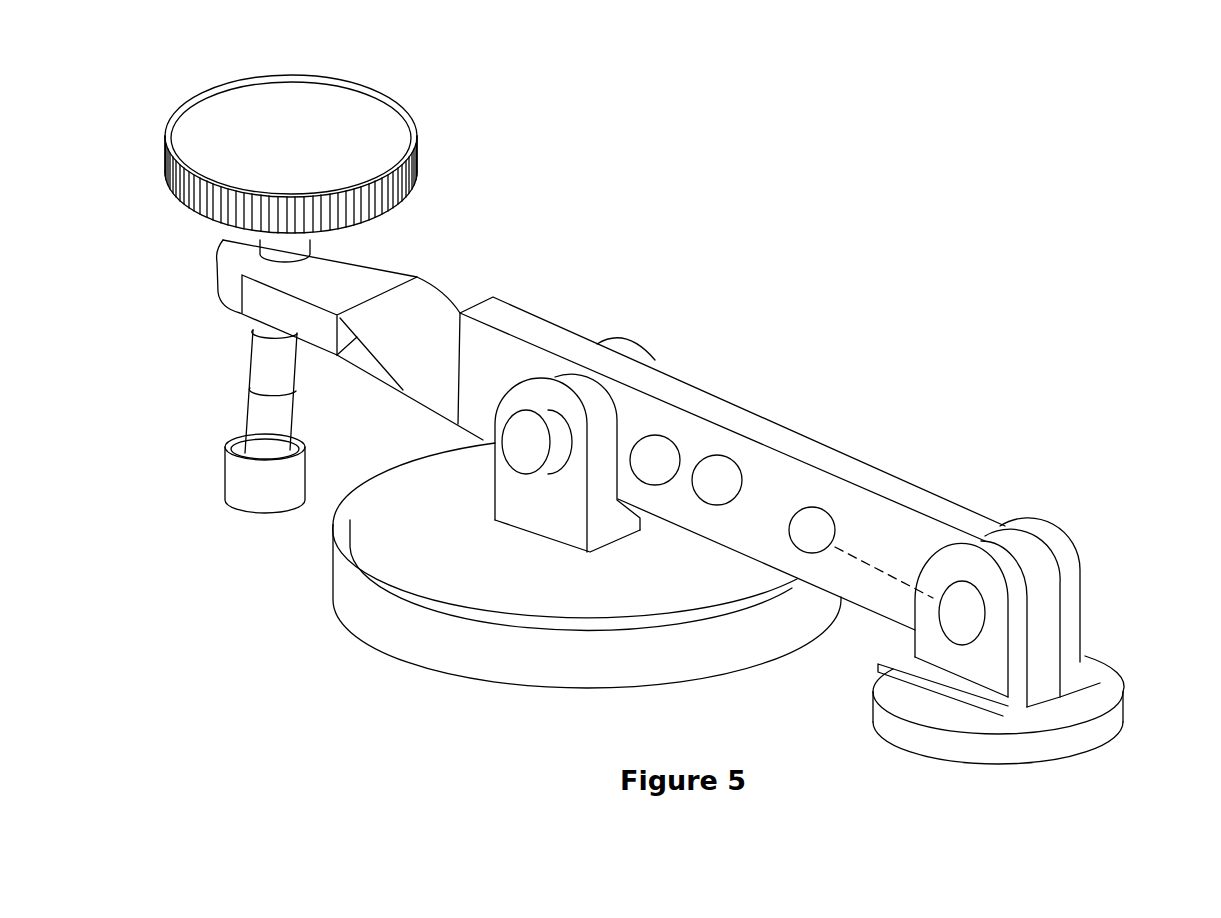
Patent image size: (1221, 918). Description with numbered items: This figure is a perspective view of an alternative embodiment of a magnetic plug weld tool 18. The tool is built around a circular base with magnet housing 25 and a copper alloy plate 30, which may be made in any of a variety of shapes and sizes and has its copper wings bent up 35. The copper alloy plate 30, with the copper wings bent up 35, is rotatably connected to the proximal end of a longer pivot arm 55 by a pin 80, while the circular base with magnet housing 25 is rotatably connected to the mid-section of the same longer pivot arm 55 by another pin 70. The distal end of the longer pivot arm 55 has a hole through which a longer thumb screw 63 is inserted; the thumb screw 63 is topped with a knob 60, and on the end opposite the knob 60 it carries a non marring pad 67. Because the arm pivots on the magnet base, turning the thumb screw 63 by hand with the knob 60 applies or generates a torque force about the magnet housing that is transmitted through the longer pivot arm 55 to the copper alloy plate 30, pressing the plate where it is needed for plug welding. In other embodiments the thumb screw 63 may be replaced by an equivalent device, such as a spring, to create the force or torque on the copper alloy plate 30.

The magnetic plug weld tool 18 is at (683, 297).
The circular base with magnet housing 25 is at (377, 617).
The copper alloy plate 30 is at (1080, 743).
The copper wings bent up 35 is at (1073, 630).
The longer pivot arm 55 is at (752, 403).
The knob 60 is at (290, 122).
The longer thumb screw 63 is at (250, 369).
The non marring pad 67 is at (258, 489).
The pin 70 is at (717, 477).
The pin 80 is at (818, 528).